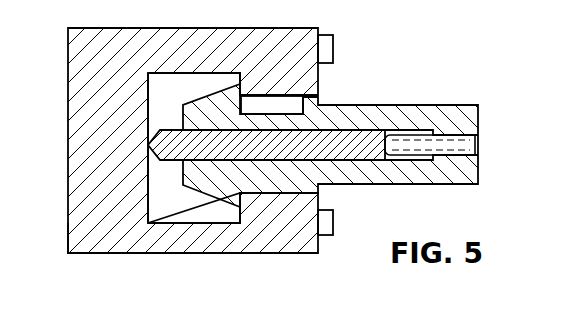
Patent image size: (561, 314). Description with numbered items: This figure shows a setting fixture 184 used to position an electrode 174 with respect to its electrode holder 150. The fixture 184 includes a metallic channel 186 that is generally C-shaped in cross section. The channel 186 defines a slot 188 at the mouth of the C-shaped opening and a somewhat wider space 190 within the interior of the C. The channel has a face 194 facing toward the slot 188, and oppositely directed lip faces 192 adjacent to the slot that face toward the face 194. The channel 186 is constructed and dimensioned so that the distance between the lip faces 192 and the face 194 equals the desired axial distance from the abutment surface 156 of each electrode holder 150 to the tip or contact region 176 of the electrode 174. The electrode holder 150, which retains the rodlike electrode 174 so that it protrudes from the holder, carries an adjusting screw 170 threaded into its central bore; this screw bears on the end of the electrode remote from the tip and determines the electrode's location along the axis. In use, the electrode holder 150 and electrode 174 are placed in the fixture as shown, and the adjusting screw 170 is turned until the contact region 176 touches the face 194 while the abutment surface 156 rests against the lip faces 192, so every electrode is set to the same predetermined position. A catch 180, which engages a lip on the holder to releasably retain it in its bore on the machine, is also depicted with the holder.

The electrode holder 150 is at (339, 100).
The abutment surface 156 is at (240, 206).
The adjusting screw 170 is at (473, 135).
The electrode 174 is at (358, 134).
The contact region 176 is at (148, 145).
The catch 180 is at (86, 226).
The fixture 184 is at (183, 257).
The channel 186 is at (127, 240).
The slot 188 is at (302, 97).
The space 190 is at (203, 80).
The lip faces 192 is at (243, 83).
The face 194 is at (147, 109).